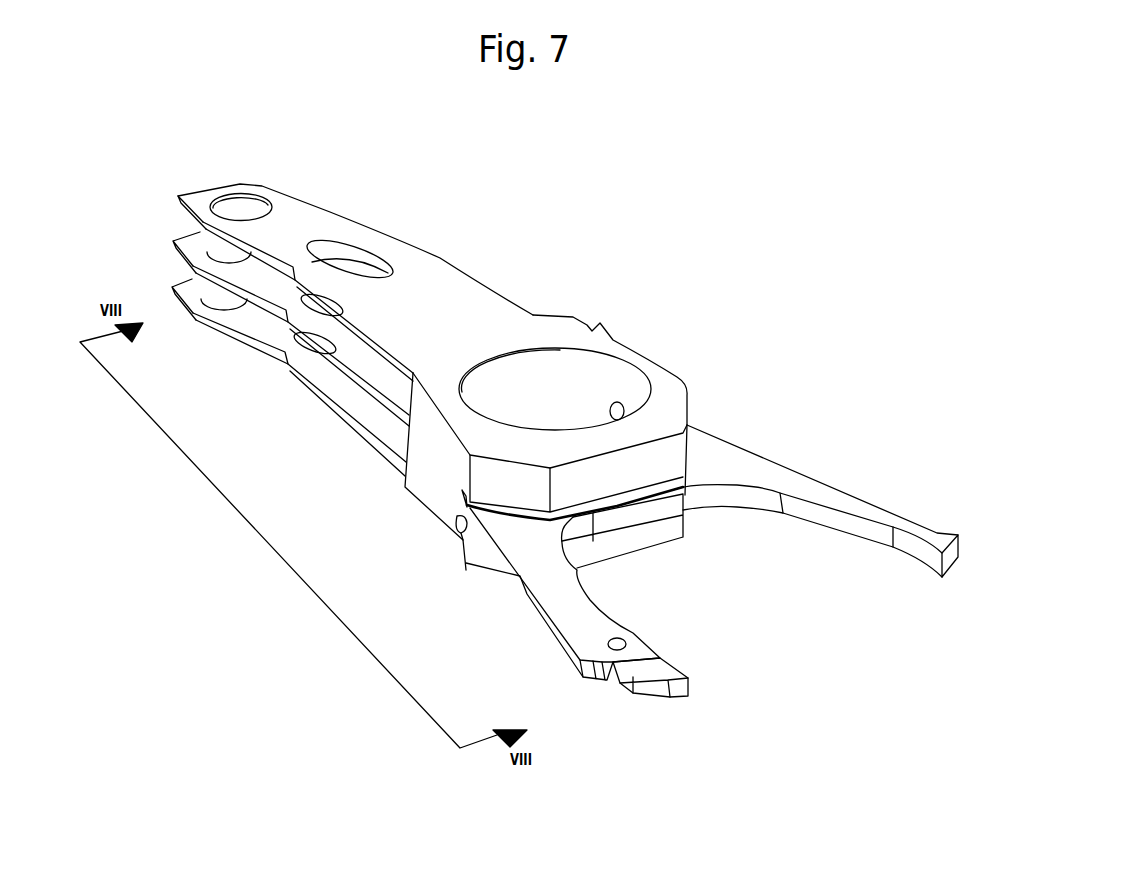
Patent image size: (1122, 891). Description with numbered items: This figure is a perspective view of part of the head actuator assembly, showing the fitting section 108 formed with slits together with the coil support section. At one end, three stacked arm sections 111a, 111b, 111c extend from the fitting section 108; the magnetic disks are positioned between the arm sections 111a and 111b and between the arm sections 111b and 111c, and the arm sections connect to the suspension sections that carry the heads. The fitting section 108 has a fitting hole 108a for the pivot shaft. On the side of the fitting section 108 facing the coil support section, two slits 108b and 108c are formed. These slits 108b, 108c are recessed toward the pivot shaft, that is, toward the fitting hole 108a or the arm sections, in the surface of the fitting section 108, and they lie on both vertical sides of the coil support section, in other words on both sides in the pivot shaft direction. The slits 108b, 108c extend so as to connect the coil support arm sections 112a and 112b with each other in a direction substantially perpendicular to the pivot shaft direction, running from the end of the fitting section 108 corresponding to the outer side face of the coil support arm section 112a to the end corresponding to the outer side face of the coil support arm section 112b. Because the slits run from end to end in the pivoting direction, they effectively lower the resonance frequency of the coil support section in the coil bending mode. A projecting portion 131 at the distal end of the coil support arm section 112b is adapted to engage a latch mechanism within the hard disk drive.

The fitting section 108 is at (586, 424).
The fitting hole 108a is at (586, 371).
The slit 108b is at (655, 488).
The slit 108c is at (458, 520).
The arm section 111a is at (292, 214).
The arm section 111b is at (264, 304).
The arm section 111c is at (250, 342).
The coil support arm section 112a is at (943, 538).
The coil support arm section 112b is at (586, 630).
The projecting portion 131 is at (674, 697).